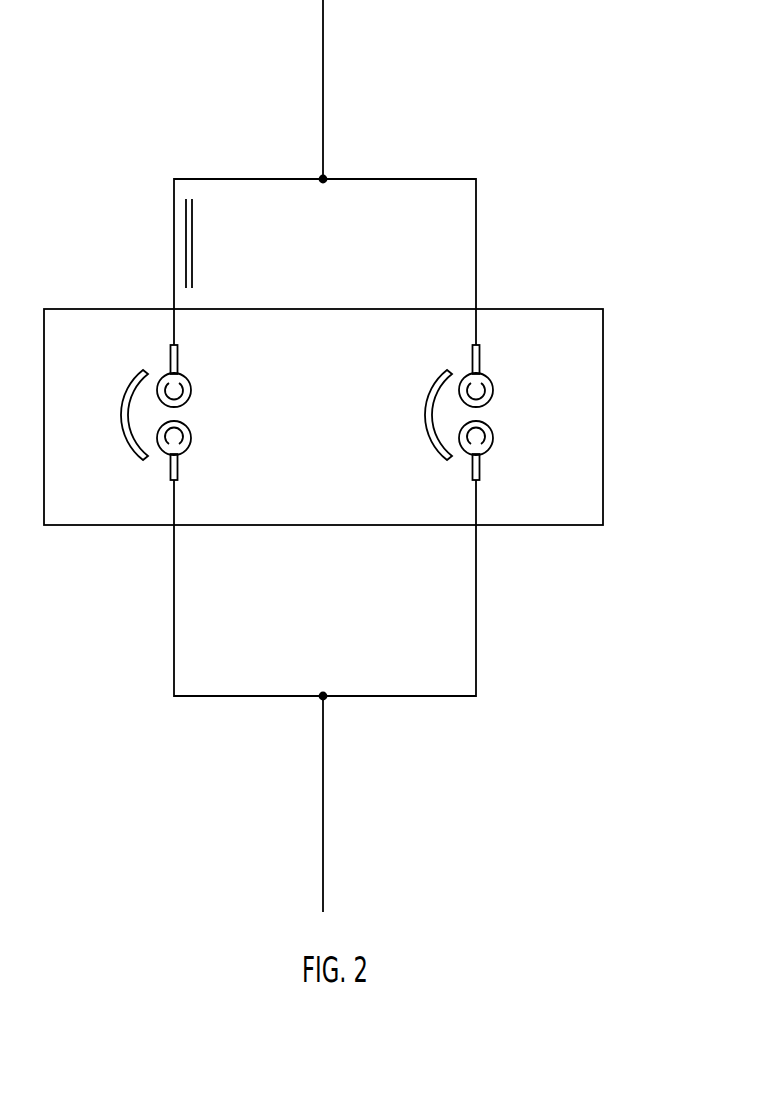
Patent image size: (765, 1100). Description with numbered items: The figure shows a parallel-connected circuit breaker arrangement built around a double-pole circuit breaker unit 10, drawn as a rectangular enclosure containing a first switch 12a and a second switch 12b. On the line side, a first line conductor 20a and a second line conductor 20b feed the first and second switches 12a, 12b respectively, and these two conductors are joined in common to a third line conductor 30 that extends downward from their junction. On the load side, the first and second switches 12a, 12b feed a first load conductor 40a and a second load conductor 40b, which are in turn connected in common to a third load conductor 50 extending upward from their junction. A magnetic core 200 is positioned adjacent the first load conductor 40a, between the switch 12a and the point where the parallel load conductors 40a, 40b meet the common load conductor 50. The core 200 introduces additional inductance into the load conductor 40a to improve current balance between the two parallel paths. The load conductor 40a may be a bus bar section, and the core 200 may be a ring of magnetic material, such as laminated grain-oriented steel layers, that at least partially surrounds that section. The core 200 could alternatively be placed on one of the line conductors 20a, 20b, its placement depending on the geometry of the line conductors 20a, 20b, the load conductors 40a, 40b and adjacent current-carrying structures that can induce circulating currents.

The double-pole circuit breaker unit 10 is at (603, 350).
The first switch 12a is at (199, 375).
The second switch 12b is at (426, 462).
The first line conductor 20a is at (174, 657).
The second line conductor 20b is at (476, 658).
The third line conductor 30 is at (323, 825).
The first load conductor 40a is at (174, 250).
The second load conductor 40b is at (476, 221).
The third load conductor 50 is at (323, 68).
The magnetic core 200 is at (192, 263).